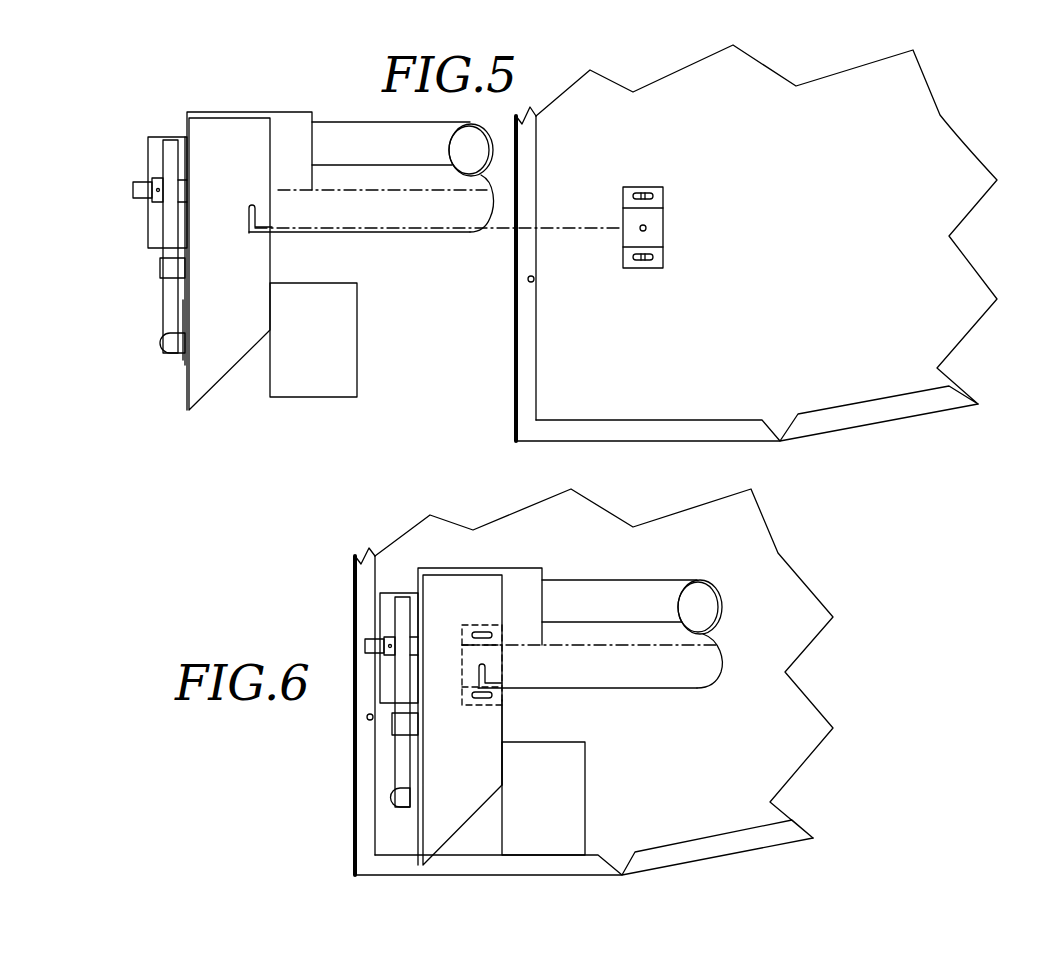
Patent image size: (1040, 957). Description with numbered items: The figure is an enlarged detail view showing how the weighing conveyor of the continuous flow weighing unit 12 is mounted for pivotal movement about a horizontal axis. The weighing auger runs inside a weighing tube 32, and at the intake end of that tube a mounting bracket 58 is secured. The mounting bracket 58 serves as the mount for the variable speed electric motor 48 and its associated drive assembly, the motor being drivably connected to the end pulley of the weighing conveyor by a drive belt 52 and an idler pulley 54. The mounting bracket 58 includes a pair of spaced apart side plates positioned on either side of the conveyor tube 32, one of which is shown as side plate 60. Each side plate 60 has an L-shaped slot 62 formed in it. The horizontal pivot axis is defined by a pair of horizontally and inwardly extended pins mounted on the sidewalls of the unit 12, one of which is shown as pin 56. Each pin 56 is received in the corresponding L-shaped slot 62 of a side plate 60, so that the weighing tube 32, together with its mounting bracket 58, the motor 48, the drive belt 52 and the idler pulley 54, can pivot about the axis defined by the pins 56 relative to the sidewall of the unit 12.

In FIG. 5, the continuous flow weighing unit 12 is at (756, 262).
In FIG. 6, the continuous flow weighing unit 12 is at (798, 553).
In FIG. 5, the weighing tube 32 is at (436, 146).
In FIG. 6, the weighing tube 32 is at (605, 595).
In FIG. 5, the variable speed electric motor 48 is at (313, 367).
In FIG. 6, the variable speed electric motor 48 is at (578, 815).
In FIG. 5, the drive belt 52 is at (120, 245).
In FIG. 6, the drive belt 52 is at (401, 622).
In FIG. 5, the idler pulley 54 is at (119, 264).
In FIG. 6, the idler pulley 54 is at (401, 725).
In FIG. 5, the pin 56 is at (683, 224).
In FIG. 6, the pin 56 is at (484, 668).
In FIG. 5, the mounting bracket 58 is at (151, 287).
In FIG. 6, the mounting bracket 58 is at (518, 727).
In FIG. 5, the side plate 60 is at (263, 261).
In FIG. 6, the side plate 60 is at (468, 590).
In FIG. 5, the L-shaped slot 62 is at (237, 188).
In FIG. 6, the L-shaped slot 62 is at (480, 672).